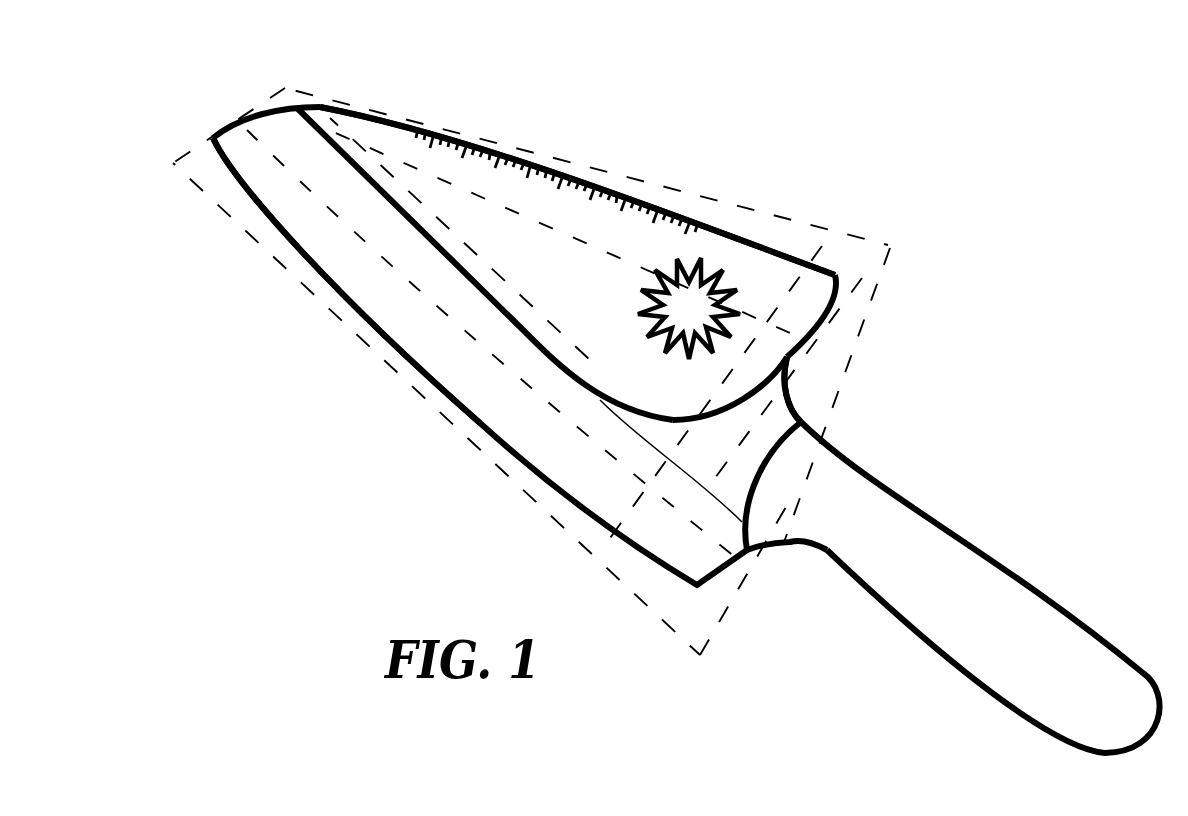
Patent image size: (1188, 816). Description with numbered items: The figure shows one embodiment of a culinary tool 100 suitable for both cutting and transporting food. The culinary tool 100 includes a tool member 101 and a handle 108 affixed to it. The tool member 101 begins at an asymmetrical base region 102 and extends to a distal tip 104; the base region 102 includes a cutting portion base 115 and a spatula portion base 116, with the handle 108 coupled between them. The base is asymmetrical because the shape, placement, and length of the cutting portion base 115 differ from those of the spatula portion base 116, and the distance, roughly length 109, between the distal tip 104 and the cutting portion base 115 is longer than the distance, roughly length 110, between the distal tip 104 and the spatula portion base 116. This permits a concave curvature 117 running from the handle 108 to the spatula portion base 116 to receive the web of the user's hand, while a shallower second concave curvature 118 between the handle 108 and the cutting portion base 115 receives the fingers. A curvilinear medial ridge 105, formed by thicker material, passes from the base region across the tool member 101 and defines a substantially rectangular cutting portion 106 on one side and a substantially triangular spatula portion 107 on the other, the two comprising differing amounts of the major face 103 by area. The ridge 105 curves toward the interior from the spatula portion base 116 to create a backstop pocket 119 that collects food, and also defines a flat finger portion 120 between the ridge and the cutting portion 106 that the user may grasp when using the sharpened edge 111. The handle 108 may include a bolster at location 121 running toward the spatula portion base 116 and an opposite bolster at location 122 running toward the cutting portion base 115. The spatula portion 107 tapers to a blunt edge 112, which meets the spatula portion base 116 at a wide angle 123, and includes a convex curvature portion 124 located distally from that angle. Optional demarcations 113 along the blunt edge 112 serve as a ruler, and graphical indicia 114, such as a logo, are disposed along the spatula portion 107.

The culinary tool 100 is at (290, 462).
The tool member 101 is at (283, 197).
The asymmetrical base region 102 is at (866, 335).
The major face 103 is at (422, 178).
The distal tip 104 is at (213, 138).
The curvilinear medial ridge 105 is at (553, 350).
The cutting portion 106 is at (398, 372).
The spatula portion 107 is at (663, 182).
The handle 108 is at (918, 575).
The length 109 is at (352, 220).
The length 110 is at (557, 217).
The sharpened edge 111 is at (347, 303).
The blunt edge 112 is at (747, 240).
The demarcations 113 is at (536, 168).
The graphical indicia 114 is at (647, 292).
The cutting portion base 115 is at (748, 553).
The spatula portion base 116 is at (843, 303).
The concave curvature 117 is at (804, 387).
The second concave curvature 118 is at (788, 558).
The backstop pocket 119 is at (683, 403).
The finger portion 120 is at (663, 433).
The location of bolster 121 is at (800, 408).
The location of opposite bolster 122 is at (793, 533).
The angle 123 is at (846, 280).
The convex curvature portion 124 is at (332, 82).